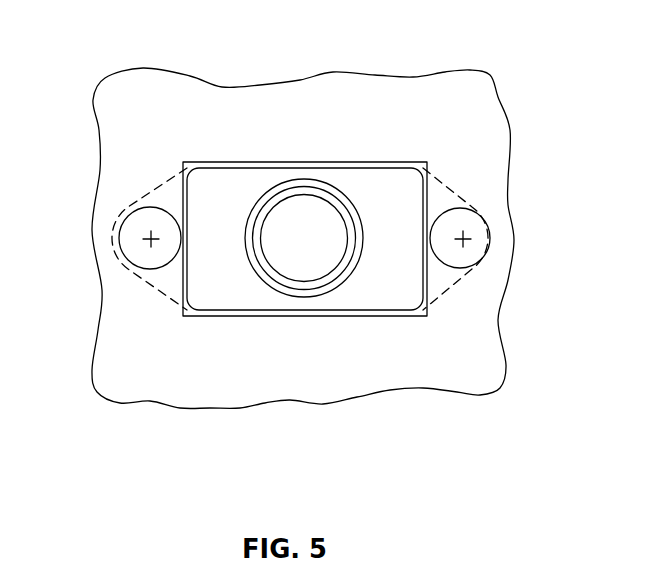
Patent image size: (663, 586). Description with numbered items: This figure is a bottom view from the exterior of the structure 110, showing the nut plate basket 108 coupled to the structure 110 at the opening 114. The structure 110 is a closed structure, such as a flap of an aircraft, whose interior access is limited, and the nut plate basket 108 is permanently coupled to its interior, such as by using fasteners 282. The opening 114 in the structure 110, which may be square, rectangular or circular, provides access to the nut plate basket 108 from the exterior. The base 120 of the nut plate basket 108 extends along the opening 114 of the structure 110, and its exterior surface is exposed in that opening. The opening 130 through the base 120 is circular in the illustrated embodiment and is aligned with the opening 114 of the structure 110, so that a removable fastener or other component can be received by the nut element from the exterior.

The nut plate basket 108 is at (229, 277).
The structure 110 is at (466, 372).
The opening 114 is at (396, 316).
The base 120 is at (366, 280).
The opening 130 is at (303, 181).
The fasteners 282 is at (448, 223).